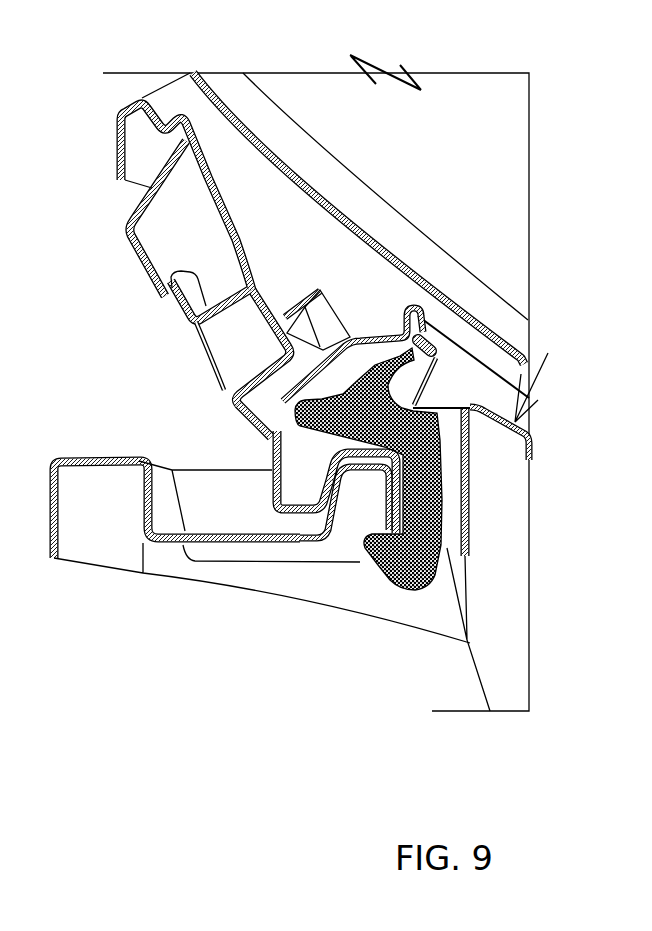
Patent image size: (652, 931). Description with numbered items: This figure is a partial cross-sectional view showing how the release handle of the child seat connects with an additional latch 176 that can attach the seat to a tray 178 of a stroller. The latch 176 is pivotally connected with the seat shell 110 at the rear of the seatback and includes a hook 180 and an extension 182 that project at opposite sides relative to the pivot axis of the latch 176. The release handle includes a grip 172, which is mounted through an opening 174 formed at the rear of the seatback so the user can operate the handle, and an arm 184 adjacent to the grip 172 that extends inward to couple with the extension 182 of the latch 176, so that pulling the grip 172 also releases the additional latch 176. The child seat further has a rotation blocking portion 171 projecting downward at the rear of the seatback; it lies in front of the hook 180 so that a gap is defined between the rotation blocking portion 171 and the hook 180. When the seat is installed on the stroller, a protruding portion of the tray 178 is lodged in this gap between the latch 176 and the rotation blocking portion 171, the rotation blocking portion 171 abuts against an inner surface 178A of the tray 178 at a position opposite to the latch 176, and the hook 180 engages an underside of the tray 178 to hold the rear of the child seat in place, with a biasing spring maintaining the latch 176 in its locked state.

The seat shell 110 is at (477, 97).
The rotation blocking portion 171 is at (294, 511).
The grip 172 is at (244, 337).
The opening 174 is at (142, 301).
The latch 176 is at (443, 451).
The tray 178 is at (102, 458).
The inner surface 178A is at (348, 513).
The hook 180 is at (408, 594).
The extension 182 is at (434, 356).
The arm 184 is at (414, 328).